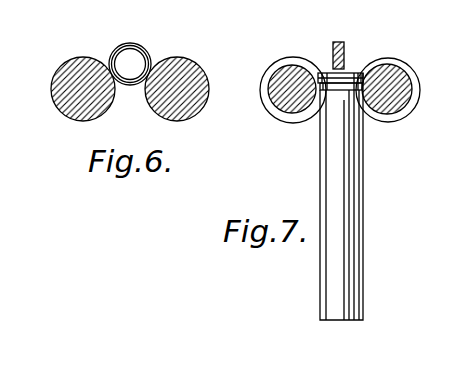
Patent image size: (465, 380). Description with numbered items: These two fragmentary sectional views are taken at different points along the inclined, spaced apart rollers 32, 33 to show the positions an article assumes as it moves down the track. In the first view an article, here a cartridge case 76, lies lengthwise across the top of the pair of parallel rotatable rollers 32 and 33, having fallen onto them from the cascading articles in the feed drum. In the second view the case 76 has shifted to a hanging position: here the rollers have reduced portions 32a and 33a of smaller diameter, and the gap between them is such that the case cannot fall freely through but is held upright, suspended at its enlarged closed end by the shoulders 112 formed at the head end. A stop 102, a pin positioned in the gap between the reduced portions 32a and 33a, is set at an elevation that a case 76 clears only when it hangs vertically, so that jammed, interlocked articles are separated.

In FIG. 6, the roller 32 is at (70, 62).
In FIG. 7, the roller 32 is at (294, 58).
In FIG. 6, the roller 33 is at (203, 72).
In FIG. 7, the roller 33 is at (412, 68).
In FIG. 6, the cartridge case 76 is at (142, 47).
In FIG. 7, the cartridge case 76 is at (363, 218).
In FIG. 7, the reduced portion of roller 32a is at (276, 105).
In FIG. 7, the reduced portion of roller 33a is at (397, 121).
In FIG. 7, the stop 102 is at (352, 29).
In FIG. 7, the shoulder 112 is at (373, 73).